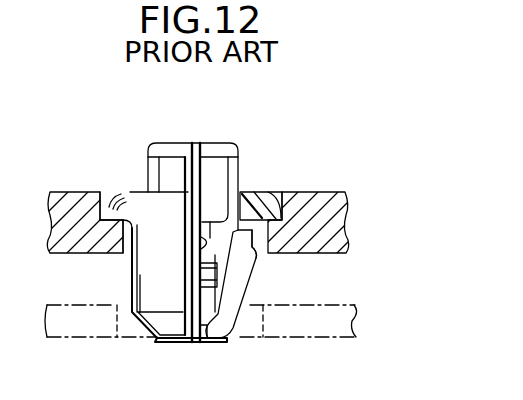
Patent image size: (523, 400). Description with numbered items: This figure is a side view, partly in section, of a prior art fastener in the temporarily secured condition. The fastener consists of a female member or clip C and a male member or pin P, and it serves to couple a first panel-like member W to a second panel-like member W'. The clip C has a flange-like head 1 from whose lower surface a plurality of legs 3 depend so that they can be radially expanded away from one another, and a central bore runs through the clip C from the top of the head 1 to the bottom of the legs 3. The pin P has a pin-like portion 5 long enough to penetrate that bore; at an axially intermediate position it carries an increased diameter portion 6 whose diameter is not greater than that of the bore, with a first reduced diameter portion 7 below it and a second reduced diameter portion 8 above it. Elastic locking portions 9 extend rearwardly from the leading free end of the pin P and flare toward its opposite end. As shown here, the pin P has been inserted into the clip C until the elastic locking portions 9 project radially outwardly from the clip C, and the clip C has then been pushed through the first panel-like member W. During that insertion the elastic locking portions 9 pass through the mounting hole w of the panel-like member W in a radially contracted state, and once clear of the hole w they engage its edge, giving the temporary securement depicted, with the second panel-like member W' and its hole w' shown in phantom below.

The head 1 is at (122, 192).
The pin P is at (231, 143).
The pin-like portion 5 is at (240, 170).
The first panel-like member W is at (199, 195).
The second reduced diameter portion 8 is at (208, 247).
The increased diameter portion 6 is at (205, 278).
The elastic locking portions 9 is at (127, 251).
The legs 3 is at (144, 296).
The mounting hole w is at (269, 237).
The second panel-like member W' is at (201, 347).
The hole in second panel w' is at (177, 347).
The clip C is at (158, 342).
The first reduced diameter portion 7 is at (216, 342).